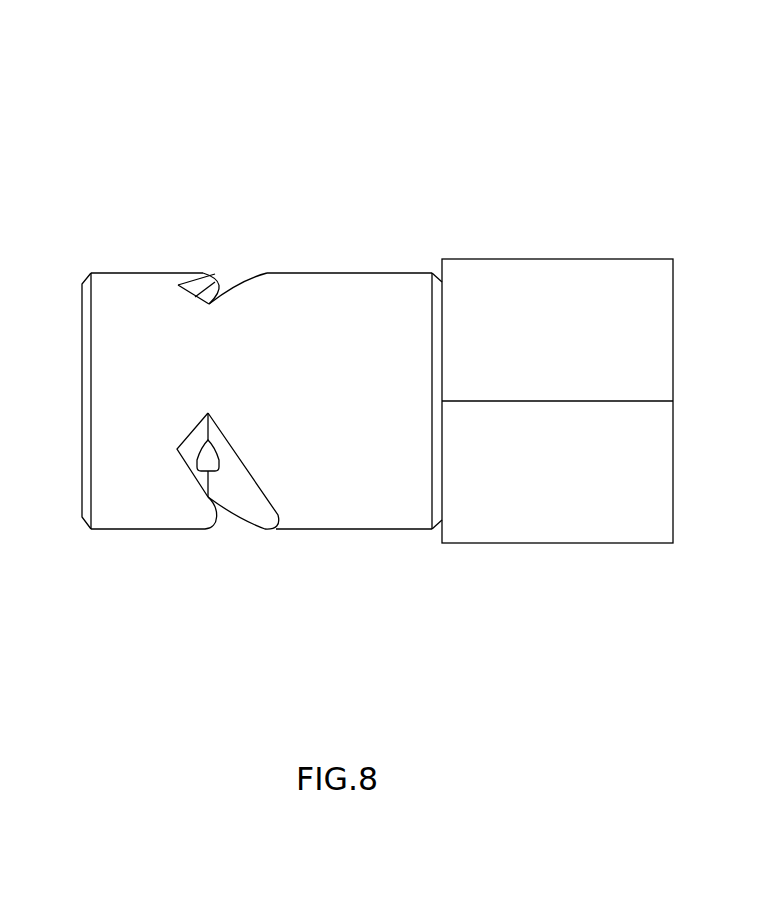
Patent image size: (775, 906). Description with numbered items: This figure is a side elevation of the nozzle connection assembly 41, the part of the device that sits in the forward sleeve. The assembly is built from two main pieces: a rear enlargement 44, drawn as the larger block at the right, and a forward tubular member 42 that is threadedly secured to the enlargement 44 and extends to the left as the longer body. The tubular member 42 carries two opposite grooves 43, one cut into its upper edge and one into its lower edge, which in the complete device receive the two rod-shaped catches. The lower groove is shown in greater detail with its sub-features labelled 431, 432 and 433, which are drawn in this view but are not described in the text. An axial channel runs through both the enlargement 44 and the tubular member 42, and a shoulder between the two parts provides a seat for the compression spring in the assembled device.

The nozzle connection assembly 41 is at (678, 112).
The forward tubular member 42 is at (378, 290).
The groove 43 is at (218, 276).
The first cutting edge portion 431 is at (190, 448).
The second cutting edge portion 432 is at (262, 510).
The chip breaker 433 is at (218, 470).
The rear enlargement 44 is at (572, 297).